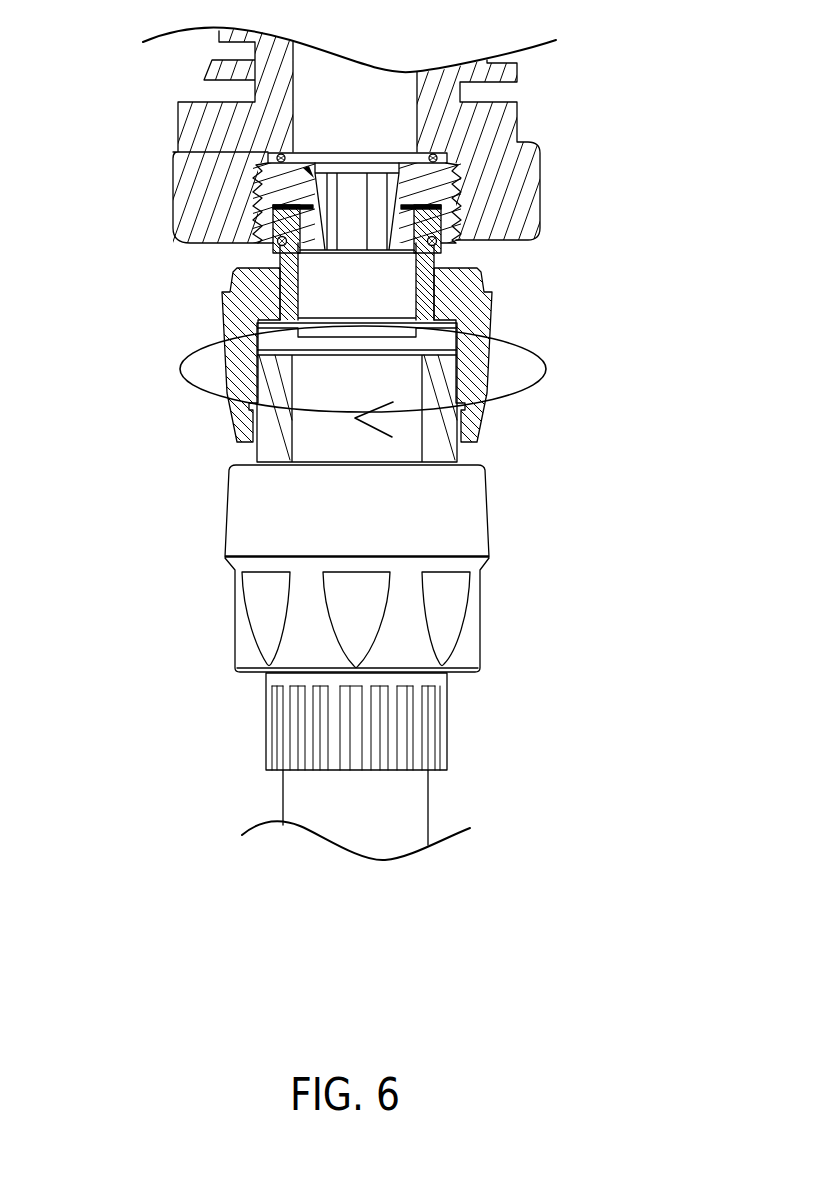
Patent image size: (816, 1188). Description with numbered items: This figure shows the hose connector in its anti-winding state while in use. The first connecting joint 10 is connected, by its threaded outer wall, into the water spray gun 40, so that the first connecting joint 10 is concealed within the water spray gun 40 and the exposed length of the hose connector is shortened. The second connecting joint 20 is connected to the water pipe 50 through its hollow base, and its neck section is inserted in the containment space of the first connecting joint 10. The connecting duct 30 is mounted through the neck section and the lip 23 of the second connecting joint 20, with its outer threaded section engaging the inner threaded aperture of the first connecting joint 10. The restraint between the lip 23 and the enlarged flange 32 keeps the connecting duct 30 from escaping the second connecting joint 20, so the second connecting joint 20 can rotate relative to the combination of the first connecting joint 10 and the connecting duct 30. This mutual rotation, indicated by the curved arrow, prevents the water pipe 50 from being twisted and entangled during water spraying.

The water spray gun 40 is at (526, 106).
The connecting duct 30 is at (267, 151).
The lip 23 is at (257, 222).
The enlarged flange 32 is at (320, 262).
The first connecting joint 10 is at (472, 194).
The second connecting joint 20 is at (488, 423).
The water pipe 50 is at (248, 730).